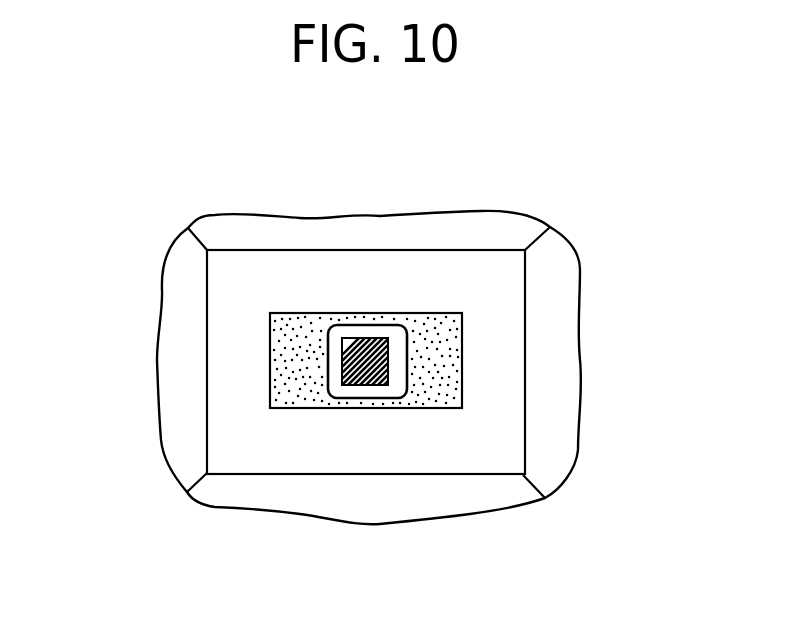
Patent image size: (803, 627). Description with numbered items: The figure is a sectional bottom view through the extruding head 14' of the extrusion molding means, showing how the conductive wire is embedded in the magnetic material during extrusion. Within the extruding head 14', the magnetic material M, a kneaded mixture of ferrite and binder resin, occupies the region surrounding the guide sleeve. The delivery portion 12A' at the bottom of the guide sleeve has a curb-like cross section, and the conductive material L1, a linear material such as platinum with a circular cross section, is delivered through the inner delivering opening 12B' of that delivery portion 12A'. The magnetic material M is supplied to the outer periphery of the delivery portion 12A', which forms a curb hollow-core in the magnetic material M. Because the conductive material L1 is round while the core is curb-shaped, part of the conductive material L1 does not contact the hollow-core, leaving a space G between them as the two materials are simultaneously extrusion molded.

The extruding head 14' is at (326, 367).
The magnetic material M is at (272, 377).
The delivery portion 12A' is at (321, 447).
The inner delivering opening 12B' is at (393, 250).
The space G is at (385, 390).
The conductive material L1 is at (388, 352).